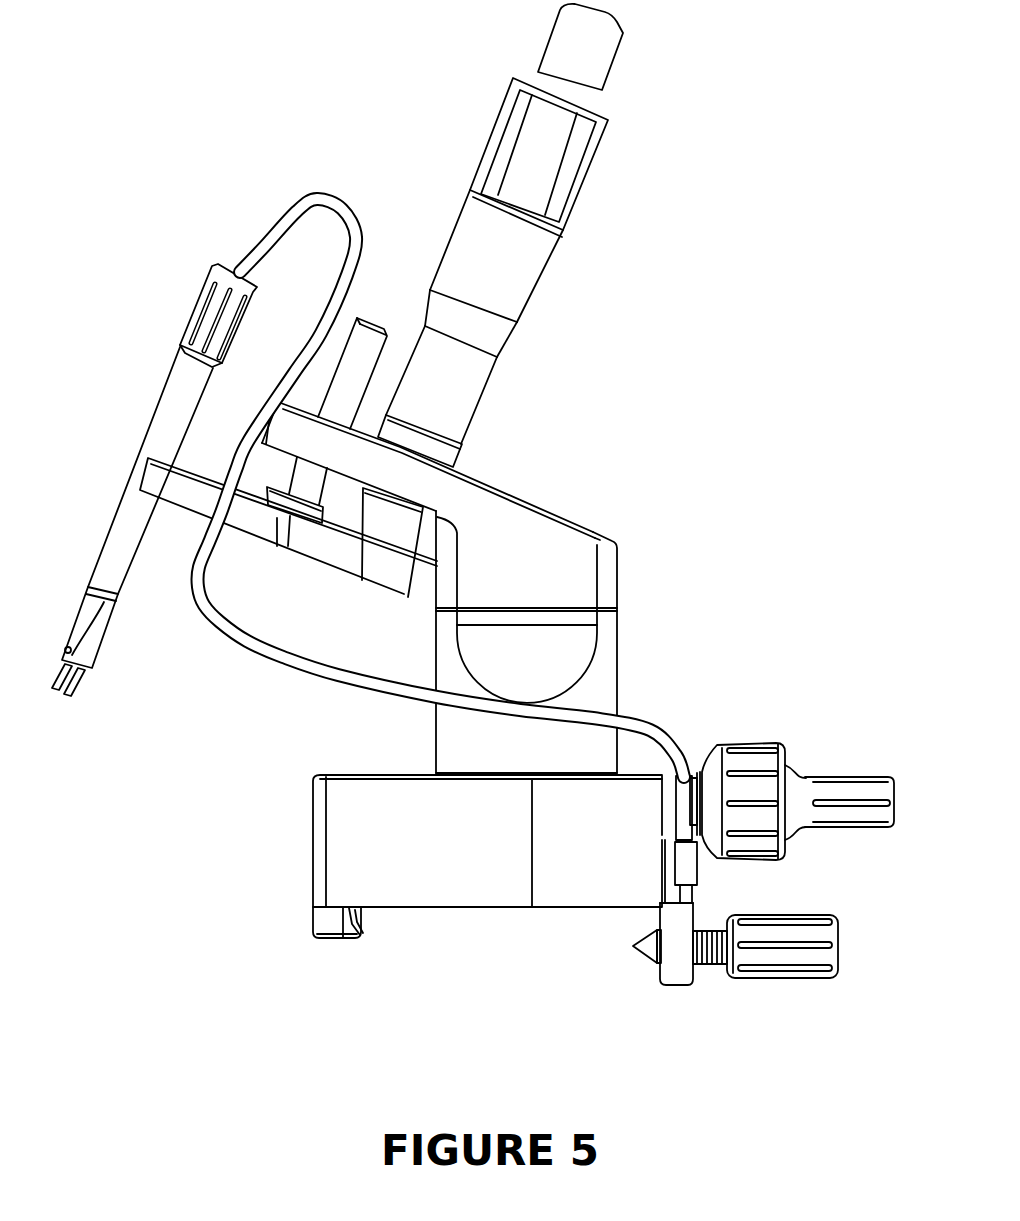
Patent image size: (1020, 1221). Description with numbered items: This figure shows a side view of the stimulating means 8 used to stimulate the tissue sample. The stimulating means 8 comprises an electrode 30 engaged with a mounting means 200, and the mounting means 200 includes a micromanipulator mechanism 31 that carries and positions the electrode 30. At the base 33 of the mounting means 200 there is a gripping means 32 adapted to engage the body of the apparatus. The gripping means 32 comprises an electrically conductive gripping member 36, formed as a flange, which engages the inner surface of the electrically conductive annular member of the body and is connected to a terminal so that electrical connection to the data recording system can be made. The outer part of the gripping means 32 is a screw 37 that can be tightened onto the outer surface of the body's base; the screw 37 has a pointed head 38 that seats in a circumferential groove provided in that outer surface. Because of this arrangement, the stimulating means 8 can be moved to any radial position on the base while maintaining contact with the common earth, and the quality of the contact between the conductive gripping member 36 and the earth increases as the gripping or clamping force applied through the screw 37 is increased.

The stimulating means 8 is at (698, 340).
The electrode 30 is at (77, 677).
The micromanipulator mechanism 31 is at (476, 400).
The gripping means 32 is at (304, 975).
The base 33 is at (310, 843).
The electrically conductive gripping member 36 is at (363, 925).
The screw 37 is at (708, 963).
The pointed head 38 is at (637, 949).
The mounting means 200 is at (563, 513).